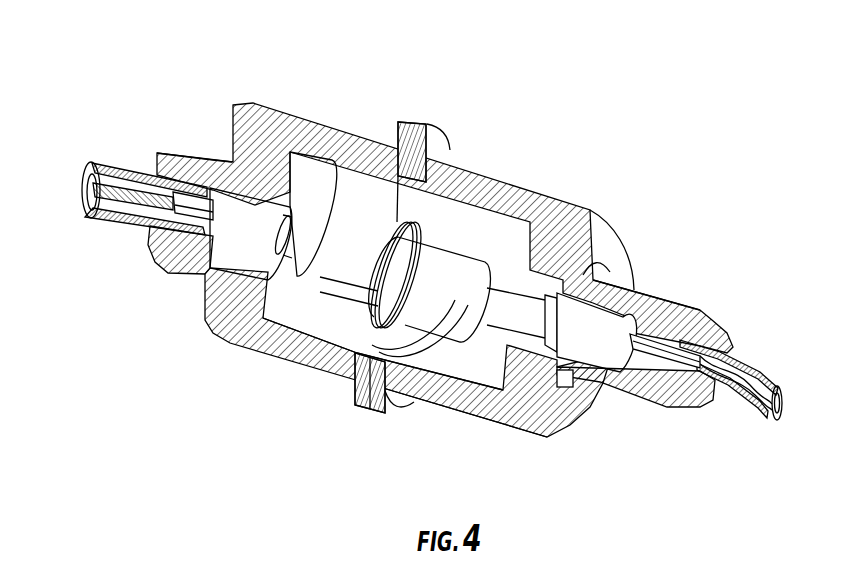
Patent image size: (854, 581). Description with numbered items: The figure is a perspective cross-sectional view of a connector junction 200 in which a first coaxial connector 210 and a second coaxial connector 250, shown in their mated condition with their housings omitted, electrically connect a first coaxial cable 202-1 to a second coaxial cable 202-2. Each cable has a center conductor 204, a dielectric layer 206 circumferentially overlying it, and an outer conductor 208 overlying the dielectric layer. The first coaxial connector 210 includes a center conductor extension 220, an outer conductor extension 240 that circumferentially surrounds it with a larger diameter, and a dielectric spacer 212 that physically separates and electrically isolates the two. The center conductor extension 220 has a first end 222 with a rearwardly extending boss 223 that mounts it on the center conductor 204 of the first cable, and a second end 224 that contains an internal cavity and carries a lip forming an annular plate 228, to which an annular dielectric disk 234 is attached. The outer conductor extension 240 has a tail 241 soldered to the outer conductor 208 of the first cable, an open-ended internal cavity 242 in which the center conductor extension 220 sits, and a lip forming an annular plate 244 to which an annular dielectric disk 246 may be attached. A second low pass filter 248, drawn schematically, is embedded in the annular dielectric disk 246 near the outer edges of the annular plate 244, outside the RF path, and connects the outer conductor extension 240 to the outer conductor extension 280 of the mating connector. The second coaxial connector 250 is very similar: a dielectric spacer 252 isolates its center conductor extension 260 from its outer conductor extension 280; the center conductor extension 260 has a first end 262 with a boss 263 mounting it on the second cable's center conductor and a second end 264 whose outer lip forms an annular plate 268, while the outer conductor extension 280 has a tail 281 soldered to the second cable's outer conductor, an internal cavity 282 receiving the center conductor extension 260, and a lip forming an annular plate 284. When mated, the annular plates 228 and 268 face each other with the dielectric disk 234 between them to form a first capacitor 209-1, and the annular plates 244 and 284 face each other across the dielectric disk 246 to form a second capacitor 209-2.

The connector junction 200 is at (606, 56).
The first coaxial cable 202-1 is at (109, 165).
The second coaxial cable 202-2 is at (747, 368).
The center conductor 204 is at (84, 183).
The dielectric layer 206 is at (88, 200).
The outer conductor 208 is at (89, 174).
The first capacitor 209-1 is at (356, 261).
The second capacitor 209-2 is at (305, 427).
The first coaxial connector 210 is at (186, 381).
The dielectric spacer 212 is at (230, 236).
The center conductor extension 220 is at (318, 261).
The first end 222 is at (300, 225).
The boss 223 is at (170, 198).
The second end 224 is at (362, 287).
The annular plate 228 is at (383, 229).
The annular dielectric disk 234 is at (397, 222).
The outer conductor extension 240 is at (243, 334).
The tail 241 is at (183, 150).
The internal cavity 242 is at (317, 322).
The annular plate 244 is at (352, 397).
The annular dielectric disk 246 is at (369, 406).
The second low pass filter 248 is at (400, 126).
The second coaxial connector 250 is at (650, 122).
The dielectric spacer 252 is at (610, 321).
The center conductor extension 260 is at (455, 309).
The first end 262 is at (480, 322).
The boss 263 is at (687, 329).
The second end 264 is at (397, 328).
The annular plate 268 is at (400, 246).
The outer conductor extension 280 is at (493, 405).
The tail 281 is at (653, 383).
The internal cavity 282 is at (417, 382).
The annular plate 284 is at (433, 140).